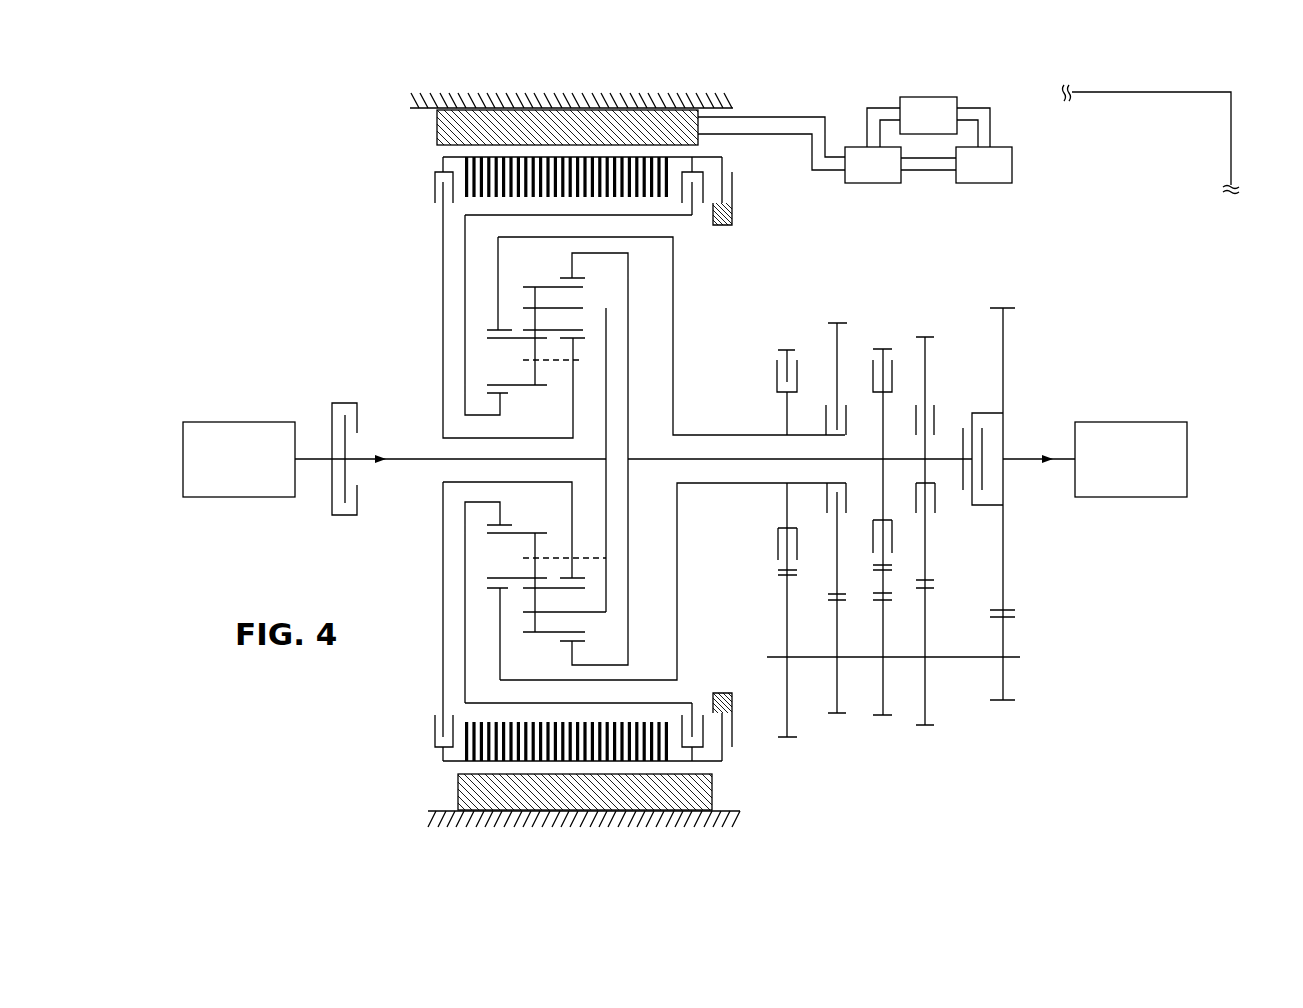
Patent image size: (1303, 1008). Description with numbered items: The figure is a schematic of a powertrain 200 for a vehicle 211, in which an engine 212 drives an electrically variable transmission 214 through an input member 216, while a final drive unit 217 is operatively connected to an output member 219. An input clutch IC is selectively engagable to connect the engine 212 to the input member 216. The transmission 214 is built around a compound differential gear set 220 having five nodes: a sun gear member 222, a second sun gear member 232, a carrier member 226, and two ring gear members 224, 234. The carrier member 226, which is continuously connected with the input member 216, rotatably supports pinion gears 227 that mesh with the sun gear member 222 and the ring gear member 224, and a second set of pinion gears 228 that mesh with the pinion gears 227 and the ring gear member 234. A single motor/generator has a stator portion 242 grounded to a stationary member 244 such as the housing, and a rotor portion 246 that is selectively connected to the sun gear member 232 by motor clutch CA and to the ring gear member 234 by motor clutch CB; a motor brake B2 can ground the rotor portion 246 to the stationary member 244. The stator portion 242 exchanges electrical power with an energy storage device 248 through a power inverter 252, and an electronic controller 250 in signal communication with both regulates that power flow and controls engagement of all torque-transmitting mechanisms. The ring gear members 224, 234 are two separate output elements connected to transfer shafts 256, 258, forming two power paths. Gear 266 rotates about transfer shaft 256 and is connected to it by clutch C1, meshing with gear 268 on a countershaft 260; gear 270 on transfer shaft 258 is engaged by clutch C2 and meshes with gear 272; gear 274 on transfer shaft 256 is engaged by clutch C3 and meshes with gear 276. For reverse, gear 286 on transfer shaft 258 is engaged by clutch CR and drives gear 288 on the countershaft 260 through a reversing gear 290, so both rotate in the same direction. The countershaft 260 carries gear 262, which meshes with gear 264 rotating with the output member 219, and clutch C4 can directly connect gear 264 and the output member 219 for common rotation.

The powertrain 200 is at (904, 249).
The vehicle 211 is at (1233, 143).
The engine 212 is at (230, 421).
The electrically variable transmission 214 is at (984, 267).
The input member 216 is at (393, 458).
The final drive unit 217 is at (1145, 421).
The output member 219 is at (1022, 458).
The compound differential gear set 220 is at (766, 217).
The sun gear member 222 is at (503, 396).
The ring gear member 224 is at (493, 328).
The carrier member 226 is at (580, 307).
The pinion gears 227 is at (532, 353).
The second set of pinion gears 228 is at (533, 298).
The sun gear member 232 is at (578, 341).
The ring gear member 234 is at (568, 277).
The stator portion 242 is at (437, 124).
The stationary member 244 is at (413, 103).
The rotor portion 246 is at (467, 152).
The energy storage device 248 is at (972, 184).
The electronic controller 250 is at (950, 97).
The power inverter 252 is at (878, 184).
The transfer shaft 256 is at (720, 434).
The transfer shaft 258 is at (738, 462).
The countershaft 260 is at (977, 660).
The gear 262 is at (1004, 638).
The gear 264 is at (1005, 365).
The gear 266 is at (777, 352).
The gear 268 is at (783, 603).
The gear 270 is at (928, 358).
The gear 272 is at (925, 708).
The gear 274 is at (838, 342).
The gear 276 is at (833, 696).
The gear 286 is at (886, 360).
The gear 288 is at (878, 696).
The reversing gear 290 is at (877, 585).
The input clutch IC is at (344, 449).
The motor clutch CA is at (432, 207).
The motor clutch CB is at (698, 220).
The motor brake B2 is at (738, 164).
The clutch C1 is at (803, 568).
The clutch C2 is at (940, 527).
The clutch C3 is at (848, 525).
The clutch C4 is at (962, 500).
The clutch CR is at (897, 560).